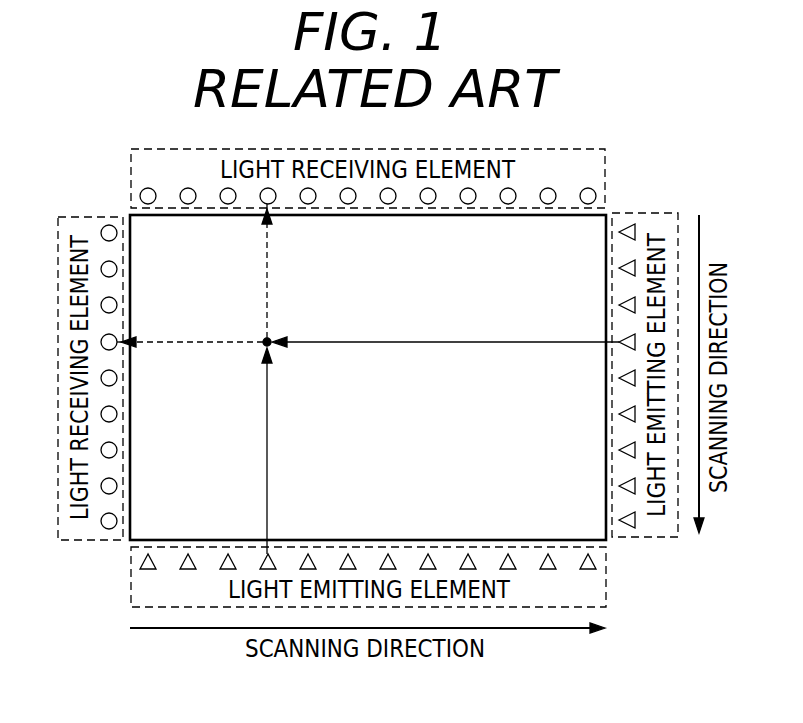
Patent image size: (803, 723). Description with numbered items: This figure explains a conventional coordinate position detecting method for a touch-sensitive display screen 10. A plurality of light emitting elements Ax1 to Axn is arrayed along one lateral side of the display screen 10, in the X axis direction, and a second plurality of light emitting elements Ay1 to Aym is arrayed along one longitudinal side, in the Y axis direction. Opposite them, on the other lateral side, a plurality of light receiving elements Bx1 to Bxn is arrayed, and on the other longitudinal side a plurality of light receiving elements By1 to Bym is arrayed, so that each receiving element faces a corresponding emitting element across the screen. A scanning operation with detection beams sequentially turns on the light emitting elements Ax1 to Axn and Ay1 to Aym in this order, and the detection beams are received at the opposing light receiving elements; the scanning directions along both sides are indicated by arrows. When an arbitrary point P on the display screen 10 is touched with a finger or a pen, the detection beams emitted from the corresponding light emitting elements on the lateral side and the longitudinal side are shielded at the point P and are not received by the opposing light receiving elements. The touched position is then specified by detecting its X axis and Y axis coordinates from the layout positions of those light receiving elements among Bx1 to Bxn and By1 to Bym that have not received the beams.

The display screen 10 is at (607, 216).
The light receiving element Bx1 is at (148, 188).
The light receiving element Bxn is at (587, 188).
The light receiving element By1 is at (104, 226).
The light receiving element Bym is at (105, 529).
The light emitting element Ax1 is at (150, 569).
The light emitting element Axn is at (590, 569).
The light emitting element Ay1 is at (636, 231).
The light emitting element Aym is at (636, 520).
The arbitrary point P is at (270, 339).